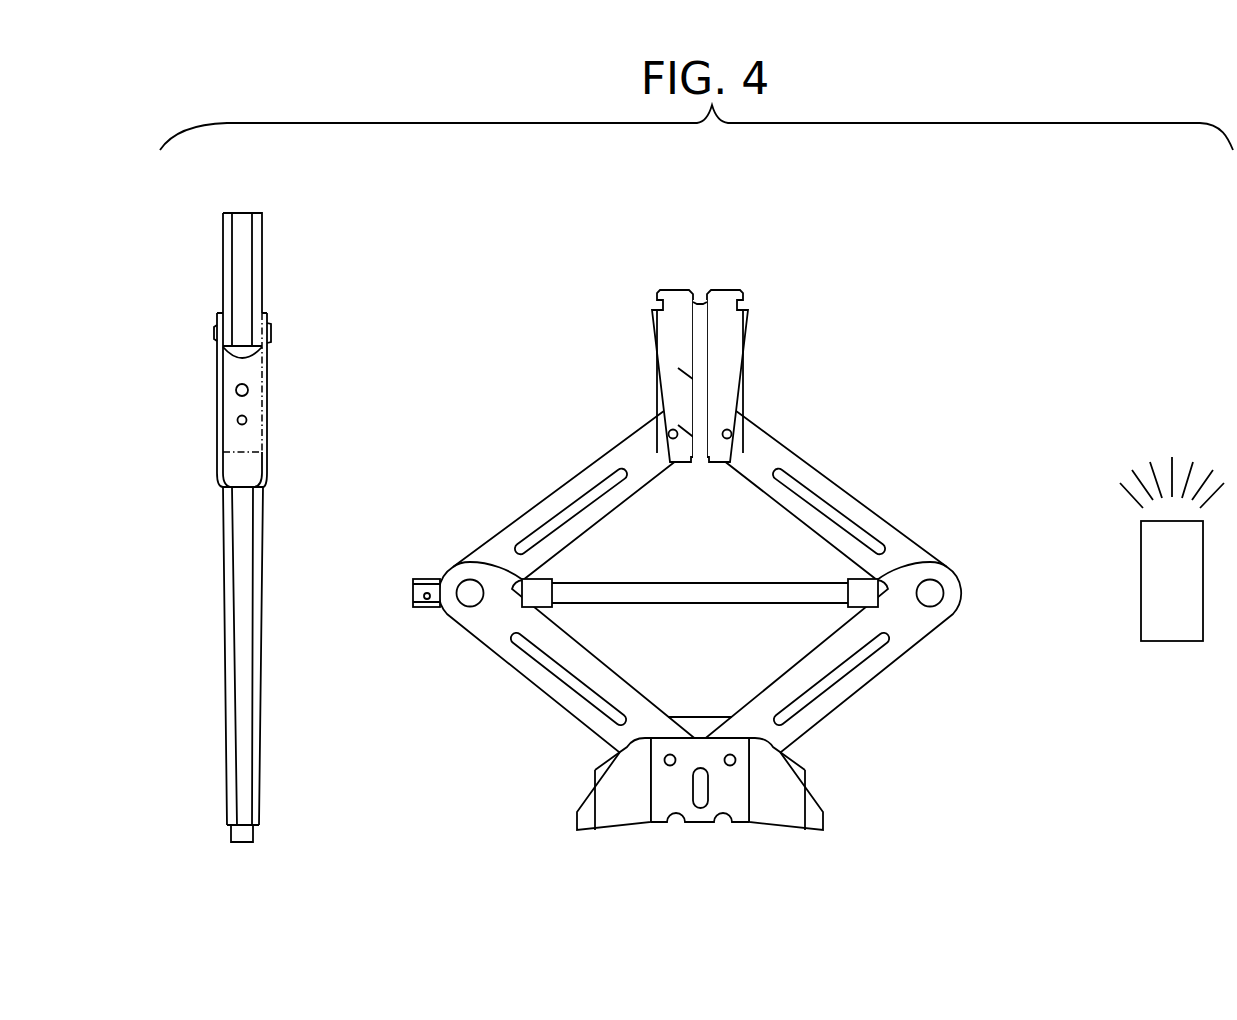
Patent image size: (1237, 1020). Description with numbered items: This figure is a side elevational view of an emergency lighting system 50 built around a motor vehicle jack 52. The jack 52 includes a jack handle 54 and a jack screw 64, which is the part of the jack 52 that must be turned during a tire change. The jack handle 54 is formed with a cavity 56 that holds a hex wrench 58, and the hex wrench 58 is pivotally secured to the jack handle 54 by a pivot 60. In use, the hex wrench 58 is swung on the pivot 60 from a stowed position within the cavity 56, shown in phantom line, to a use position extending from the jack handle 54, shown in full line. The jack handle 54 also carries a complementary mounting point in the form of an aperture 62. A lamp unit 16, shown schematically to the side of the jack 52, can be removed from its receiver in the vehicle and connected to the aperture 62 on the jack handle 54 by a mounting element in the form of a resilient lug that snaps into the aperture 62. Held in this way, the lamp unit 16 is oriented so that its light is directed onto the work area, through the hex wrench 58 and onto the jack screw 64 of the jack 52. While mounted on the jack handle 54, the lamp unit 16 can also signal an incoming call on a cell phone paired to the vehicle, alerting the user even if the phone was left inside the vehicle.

The emergency lighting system 50 is at (1085, 226).
The motor vehicle jack 52 is at (828, 480).
The jack handle 54 is at (258, 653).
The cavity 56 is at (263, 382).
The hex wrench 58 is at (263, 253).
The pivot 60 is at (271, 332).
The aperture 62 is at (234, 393).
The jack screw 64 is at (426, 578).
The lamp unit 16 is at (1143, 618).